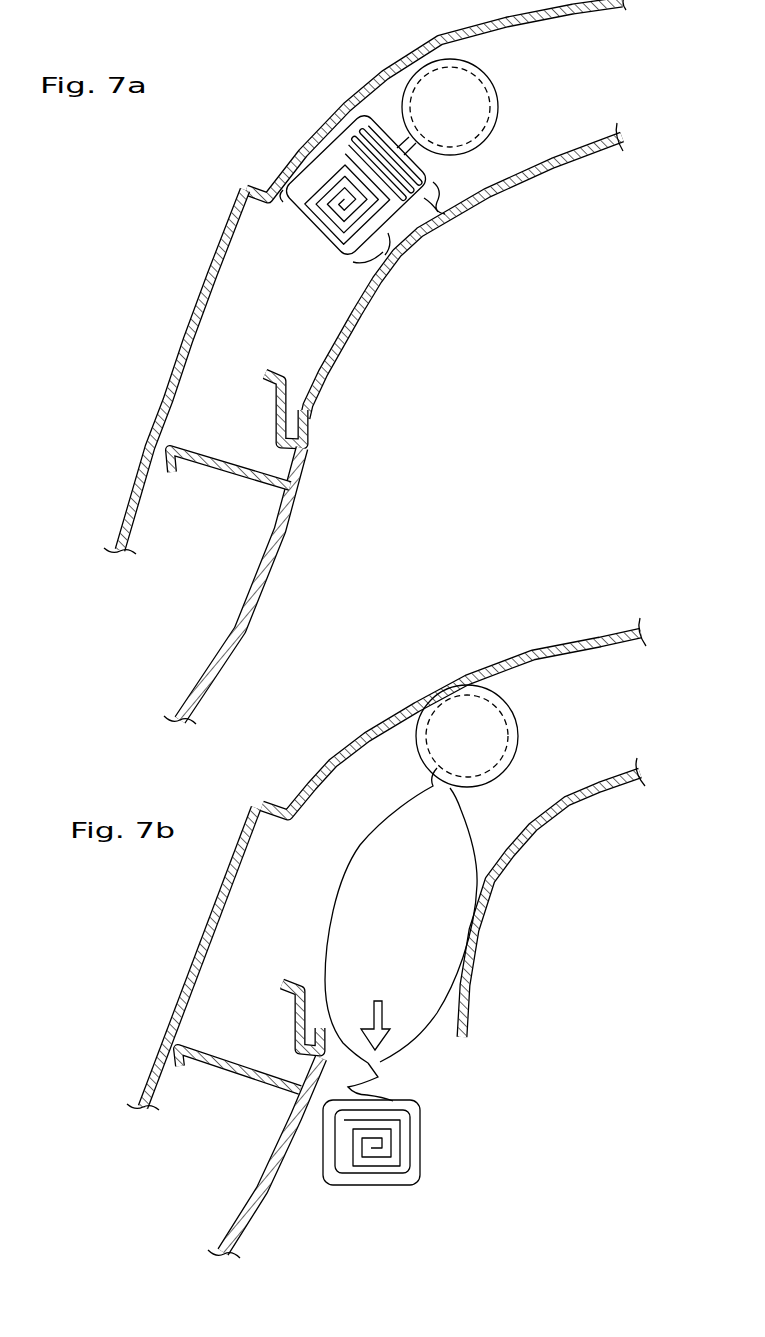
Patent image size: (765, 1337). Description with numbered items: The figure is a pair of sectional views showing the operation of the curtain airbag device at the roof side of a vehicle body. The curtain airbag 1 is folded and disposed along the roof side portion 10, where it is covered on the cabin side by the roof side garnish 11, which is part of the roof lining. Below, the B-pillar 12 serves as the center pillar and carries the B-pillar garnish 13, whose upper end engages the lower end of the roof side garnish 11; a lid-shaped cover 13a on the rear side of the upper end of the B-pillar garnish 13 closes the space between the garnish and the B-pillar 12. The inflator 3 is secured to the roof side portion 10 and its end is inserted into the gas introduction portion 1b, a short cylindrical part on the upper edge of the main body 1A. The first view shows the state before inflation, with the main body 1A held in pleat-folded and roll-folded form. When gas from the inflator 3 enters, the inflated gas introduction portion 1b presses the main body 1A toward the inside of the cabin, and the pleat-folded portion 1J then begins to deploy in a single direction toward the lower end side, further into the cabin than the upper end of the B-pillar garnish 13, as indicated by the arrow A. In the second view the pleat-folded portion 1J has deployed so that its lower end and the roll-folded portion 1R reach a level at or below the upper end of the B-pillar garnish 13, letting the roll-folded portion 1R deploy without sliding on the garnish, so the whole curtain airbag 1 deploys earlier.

In FIG. 7A, the curtain airbag 1 is at (365, 178).
In FIG. 7B, the curtain airbag 1 is at (429, 1011).
In FIG. 7A, the main body 1A is at (339, 274).
In FIG. 7B, the main body 1A is at (400, 1203).
In FIG. 7A, the roll-folded portion 1R is at (392, 264).
In FIG. 7B, the roll-folded portion 1R is at (421, 1177).
In FIG. 7A, the pleat-folded portion 1J is at (444, 212).
In FIG. 7B, the pleat-folded portion 1J is at (439, 1052).
In FIG. 7A, the gas introduction portion 1b is at (290, 206).
In FIG. 7A, the inflator 3 is at (498, 96).
In FIG. 7B, the inflator 3 is at (514, 727).
In FIG. 7A, the roof side portion 10 is at (300, 148).
In FIG. 7B, the roof side portion 10 is at (314, 772).
In FIG. 7A, the roof side garnish 11 is at (514, 194).
In FIG. 7B, the roof side garnish 11 is at (524, 854).
In FIG. 7A, the B-pillar 12 is at (129, 510).
In FIG. 7B, the B-pillar 12 is at (170, 1000).
In FIG. 7A, the B-pillar garnish 13 is at (263, 573).
In FIG. 7B, the B-pillar garnish 13 is at (247, 1187).
In FIG. 7A, the lid-shaped cover 13a is at (210, 473).
In FIG. 7B, the lid-shaped cover 13a is at (227, 1073).
In FIG. 7B, the arrow A is at (387, 1017).